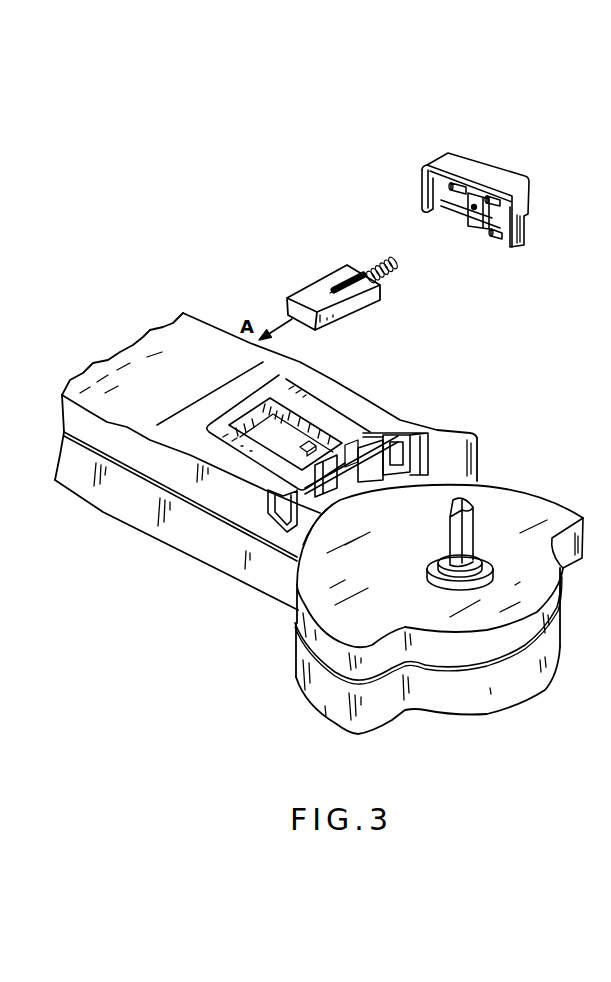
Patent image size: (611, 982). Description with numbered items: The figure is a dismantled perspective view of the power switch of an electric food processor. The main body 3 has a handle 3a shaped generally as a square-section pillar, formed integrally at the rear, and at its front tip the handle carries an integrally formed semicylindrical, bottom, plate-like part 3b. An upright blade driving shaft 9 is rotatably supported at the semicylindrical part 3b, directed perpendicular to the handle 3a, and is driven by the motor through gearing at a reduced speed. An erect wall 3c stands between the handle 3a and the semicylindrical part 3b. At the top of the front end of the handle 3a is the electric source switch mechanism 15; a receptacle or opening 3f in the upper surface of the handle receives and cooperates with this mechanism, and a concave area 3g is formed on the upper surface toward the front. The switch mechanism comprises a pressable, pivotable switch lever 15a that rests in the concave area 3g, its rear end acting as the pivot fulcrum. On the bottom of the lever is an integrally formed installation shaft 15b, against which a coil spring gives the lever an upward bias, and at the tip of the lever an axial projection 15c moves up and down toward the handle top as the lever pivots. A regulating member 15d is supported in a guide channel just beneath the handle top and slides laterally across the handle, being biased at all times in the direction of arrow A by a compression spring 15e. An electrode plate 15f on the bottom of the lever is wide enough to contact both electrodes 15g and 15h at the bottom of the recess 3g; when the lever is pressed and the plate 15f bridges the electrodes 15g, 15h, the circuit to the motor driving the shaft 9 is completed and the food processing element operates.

The main body 3 is at (211, 567).
The handle 3a is at (151, 537).
The semicylindrical plate part 3b is at (318, 678).
The erect wall 3c is at (458, 462).
The receptacle 3f is at (288, 523).
The concave area 3g is at (212, 426).
The blade driving shaft 9 is at (476, 538).
The switch mechanism 15 is at (340, 235).
The switch lever 15a is at (500, 172).
The installation shaft 15b is at (453, 212).
The axial projection 15c is at (493, 240).
The regulating member 15d is at (345, 311).
The compression spring 15e is at (382, 265).
The electrode plate 15f is at (472, 227).
The electrode 15g is at (306, 452).
The electrode 15h is at (295, 450).